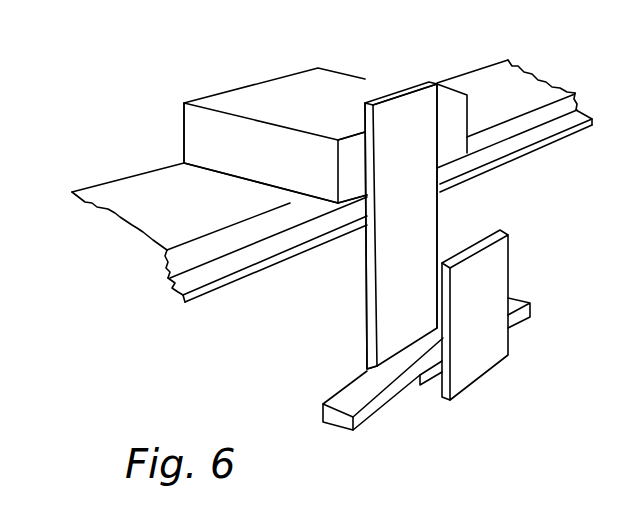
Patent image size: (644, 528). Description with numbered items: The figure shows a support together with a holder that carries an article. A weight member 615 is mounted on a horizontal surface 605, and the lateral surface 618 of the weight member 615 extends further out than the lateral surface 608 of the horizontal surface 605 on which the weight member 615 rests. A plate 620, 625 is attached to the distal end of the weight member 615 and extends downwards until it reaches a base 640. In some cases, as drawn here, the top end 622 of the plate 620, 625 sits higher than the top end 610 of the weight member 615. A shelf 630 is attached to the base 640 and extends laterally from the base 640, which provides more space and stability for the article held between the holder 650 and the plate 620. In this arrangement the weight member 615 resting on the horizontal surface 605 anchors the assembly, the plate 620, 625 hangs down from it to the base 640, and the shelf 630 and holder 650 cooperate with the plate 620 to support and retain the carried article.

The horizontal surface 605 is at (140, 210).
The lateral surface of the surface 608 is at (193, 257).
The top end of the weight member 610 is at (274, 90).
The weight member 615 is at (190, 128).
The lateral surface of the weight member 618 is at (351, 183).
The plate 620 is at (422, 218).
The top end of the plate 622 is at (421, 83).
The plate 625 is at (369, 300).
The shelf 630 is at (345, 428).
The base 640 is at (433, 403).
The holder 650 is at (490, 347).